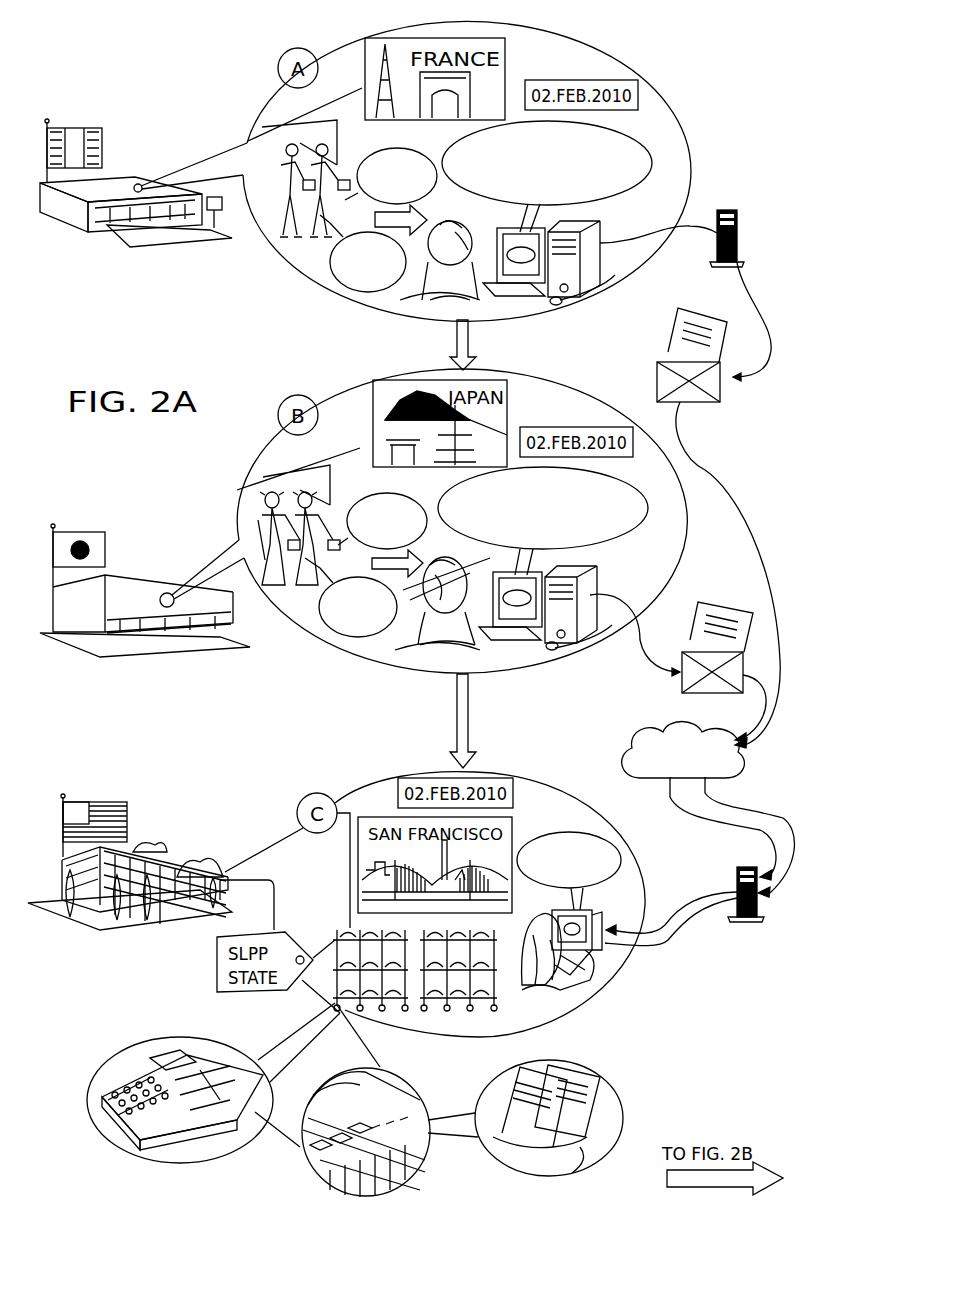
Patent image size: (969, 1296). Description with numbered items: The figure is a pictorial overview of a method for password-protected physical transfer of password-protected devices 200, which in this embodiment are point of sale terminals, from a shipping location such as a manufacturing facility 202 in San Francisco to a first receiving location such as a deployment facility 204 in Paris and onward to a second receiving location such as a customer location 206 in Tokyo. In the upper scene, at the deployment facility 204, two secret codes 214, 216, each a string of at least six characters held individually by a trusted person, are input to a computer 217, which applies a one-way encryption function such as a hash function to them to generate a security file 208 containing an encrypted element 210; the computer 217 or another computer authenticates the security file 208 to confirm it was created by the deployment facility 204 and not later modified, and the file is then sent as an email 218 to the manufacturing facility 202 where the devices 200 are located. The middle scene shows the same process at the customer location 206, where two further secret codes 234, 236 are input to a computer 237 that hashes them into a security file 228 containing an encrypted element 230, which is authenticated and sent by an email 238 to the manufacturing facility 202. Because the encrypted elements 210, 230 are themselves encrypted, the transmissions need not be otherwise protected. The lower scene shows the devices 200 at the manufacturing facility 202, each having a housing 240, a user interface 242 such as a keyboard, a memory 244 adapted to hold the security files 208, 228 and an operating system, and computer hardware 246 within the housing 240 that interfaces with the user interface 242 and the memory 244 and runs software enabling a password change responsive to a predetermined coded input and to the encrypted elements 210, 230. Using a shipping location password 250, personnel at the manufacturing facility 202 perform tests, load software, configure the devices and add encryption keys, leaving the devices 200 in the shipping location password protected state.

The password-protected devices 200 is at (343, 933).
The manufacturing facility 202 is at (167, 840).
The deployment facility 204 is at (123, 165).
The customer location 206 is at (133, 572).
The security file 208 is at (682, 350).
The encrypted element 210 is at (697, 324).
The secret code 214 is at (364, 157).
The secret code 216 is at (382, 292).
The computer 217 is at (600, 243).
The email 218 is at (710, 402).
The security file 228 is at (700, 637).
The encrypted element 230 is at (718, 613).
The secret code 234 is at (364, 502).
The secret code 236 is at (345, 637).
The computer 237 is at (588, 572).
The email 238 is at (700, 687).
The housing 240 is at (197, 1040).
The user interface 242 is at (127, 1078).
The memory 244 is at (357, 1123).
The computer hardware 246 is at (327, 1180).
The shipping location password 250 is at (603, 885).